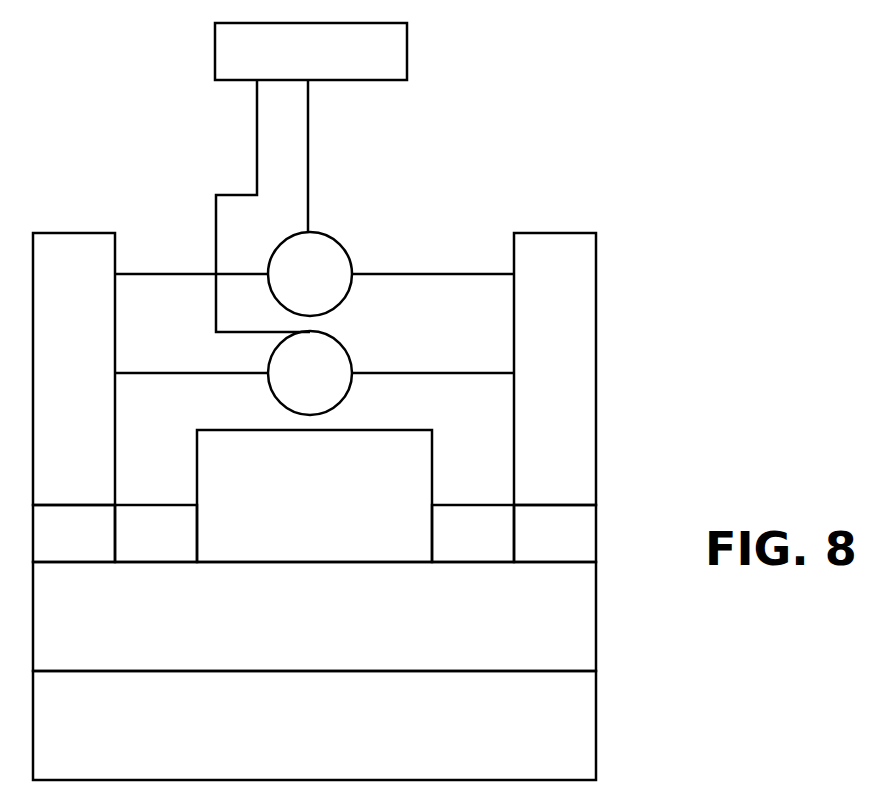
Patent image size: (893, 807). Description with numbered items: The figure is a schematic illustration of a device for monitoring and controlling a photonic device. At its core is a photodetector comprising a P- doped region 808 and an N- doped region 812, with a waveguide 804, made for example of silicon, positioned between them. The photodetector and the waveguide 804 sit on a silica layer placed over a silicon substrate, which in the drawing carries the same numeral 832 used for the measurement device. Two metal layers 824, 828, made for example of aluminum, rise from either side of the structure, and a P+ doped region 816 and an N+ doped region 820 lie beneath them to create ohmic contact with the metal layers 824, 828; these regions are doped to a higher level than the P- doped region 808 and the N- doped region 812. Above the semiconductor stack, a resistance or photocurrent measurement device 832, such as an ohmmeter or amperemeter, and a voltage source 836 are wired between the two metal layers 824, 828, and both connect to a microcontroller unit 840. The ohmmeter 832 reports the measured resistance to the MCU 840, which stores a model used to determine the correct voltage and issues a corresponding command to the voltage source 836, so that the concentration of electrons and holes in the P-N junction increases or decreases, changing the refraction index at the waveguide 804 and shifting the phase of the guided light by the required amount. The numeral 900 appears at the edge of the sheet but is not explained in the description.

The microcontroller unit 840 is at (430, 47).
The voltage source 836 is at (368, 240).
The resistance or photocurrent measurement device 832 is at (368, 344).
The metal layer 824 is at (138, 412).
The metal layer 828 is at (514, 412).
The waveguide 804 is at (422, 419).
The P+ doped region 816 is at (48, 505).
The P- doped region 808 is at (130, 505).
The N- doped region 812 is at (465, 505).
The N+ doped region 820 is at (532, 505).
The sensor device 900 is at (713, 806).